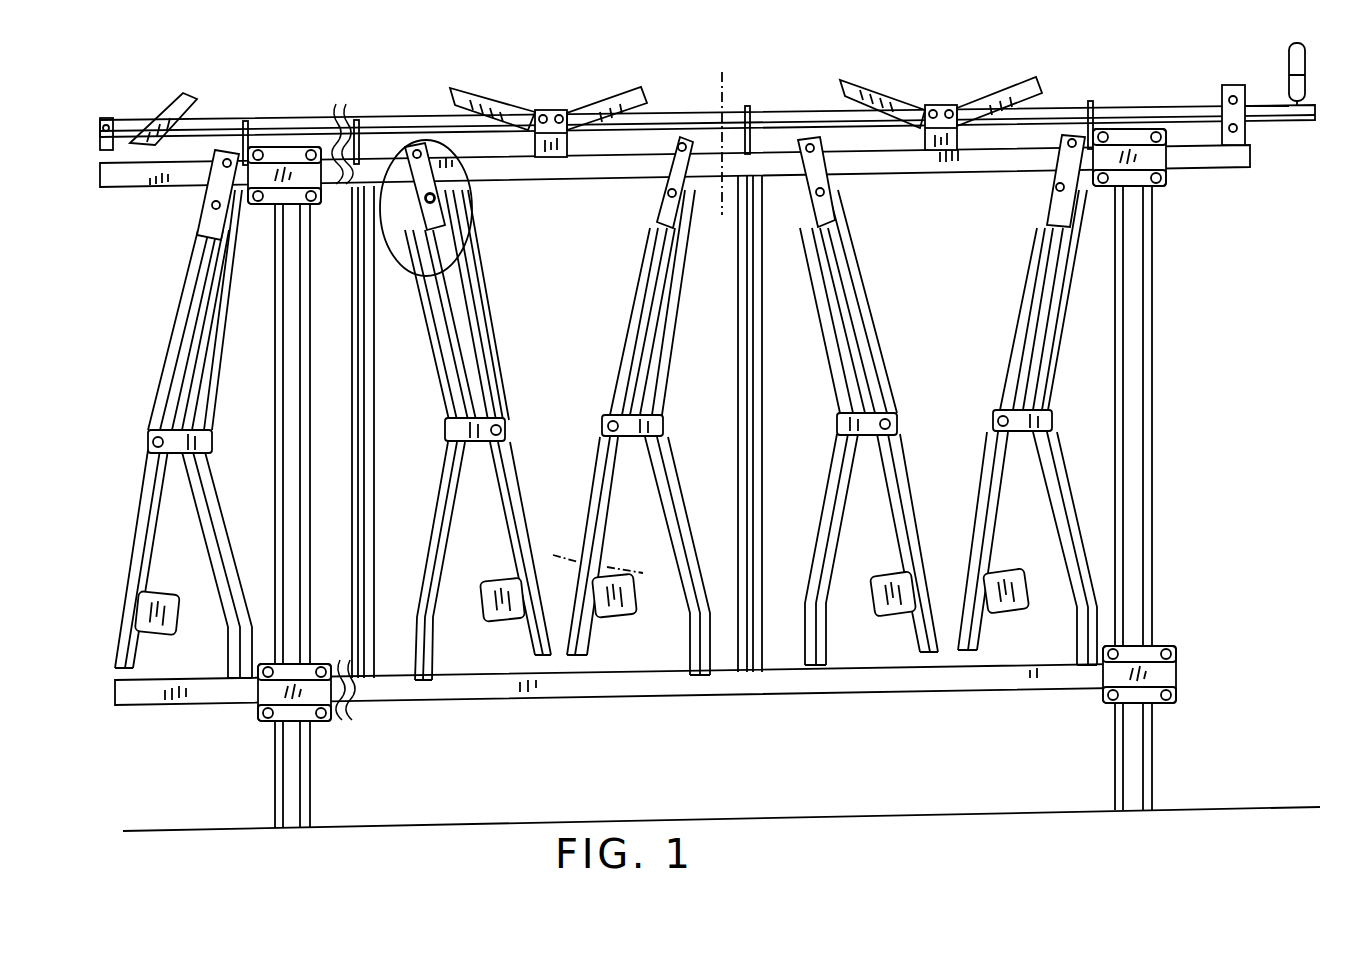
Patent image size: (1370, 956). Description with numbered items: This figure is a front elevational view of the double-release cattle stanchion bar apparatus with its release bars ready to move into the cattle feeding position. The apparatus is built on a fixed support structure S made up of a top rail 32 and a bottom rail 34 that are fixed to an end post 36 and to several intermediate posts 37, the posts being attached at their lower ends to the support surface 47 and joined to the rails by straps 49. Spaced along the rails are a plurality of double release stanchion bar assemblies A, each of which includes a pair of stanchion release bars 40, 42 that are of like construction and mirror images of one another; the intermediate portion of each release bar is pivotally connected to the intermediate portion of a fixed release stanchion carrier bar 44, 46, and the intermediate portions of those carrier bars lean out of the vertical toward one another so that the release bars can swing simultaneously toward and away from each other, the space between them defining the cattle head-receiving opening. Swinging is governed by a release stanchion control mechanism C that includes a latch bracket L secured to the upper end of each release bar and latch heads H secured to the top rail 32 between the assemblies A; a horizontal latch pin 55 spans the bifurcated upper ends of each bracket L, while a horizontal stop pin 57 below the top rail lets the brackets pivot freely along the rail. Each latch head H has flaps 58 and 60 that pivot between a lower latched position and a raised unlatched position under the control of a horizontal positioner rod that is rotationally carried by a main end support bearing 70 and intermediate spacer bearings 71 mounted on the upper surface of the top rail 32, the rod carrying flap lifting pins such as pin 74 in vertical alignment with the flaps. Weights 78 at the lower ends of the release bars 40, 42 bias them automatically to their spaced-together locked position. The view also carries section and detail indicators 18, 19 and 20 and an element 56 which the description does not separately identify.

The section line 18- 18 is at (722, 72).
The detail area of FIG. 19 is at (476, 232).
The section line 20- 20 is at (562, 555).
The top rail 32 is at (1242, 160).
The bottom rail 34 is at (1028, 677).
The end post 36 is at (1135, 758).
The intermediate posts 37 is at (293, 777).
The stanchion release bar 40 is at (472, 298).
The stanchion release bar 42 is at (180, 358).
The fixed release stanchion carrier bar 44 is at (448, 480).
The fixed release stanchion carrier bar 46 is at (200, 490).
The support surface 47 is at (432, 825).
The straps 49 is at (1140, 170).
The horizontal latch pin 55 is at (418, 143).
The pivot plate 56 is at (690, 138).
The horizontal stop pin 57 is at (452, 197).
The flap 58 is at (465, 95).
The flap 60 is at (152, 128).
The main end support bearing 70 is at (1232, 88).
The intermediate spacer bearings 71 is at (340, 118).
The flap lifting pin 74 is at (628, 606).
The weights 78 is at (500, 622).
The release stanchion control mechanism C is at (1063, 102).
The latch heads H is at (550, 110).
The latch bracket L is at (437, 218).
The double release stanchion bar assemblies A is at (174, 318).
The fixed support structure S is at (1158, 512).